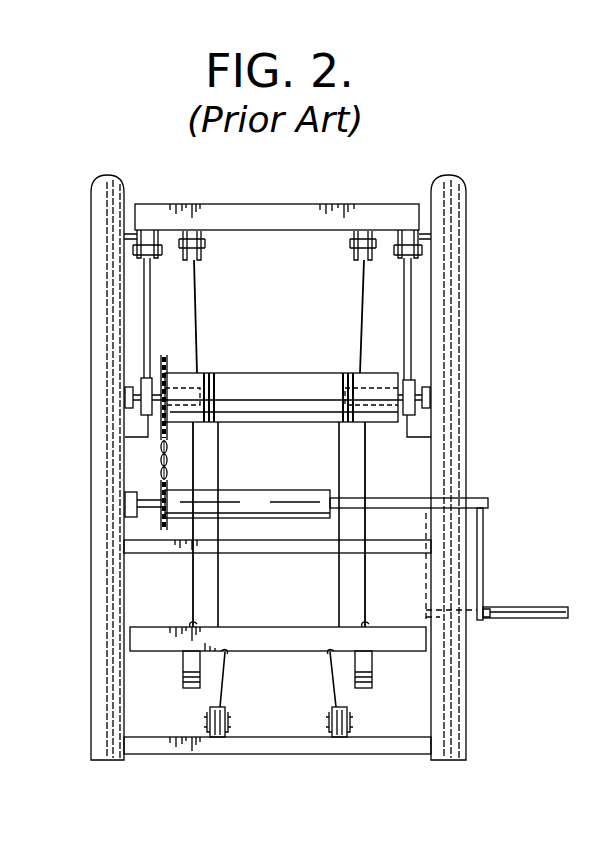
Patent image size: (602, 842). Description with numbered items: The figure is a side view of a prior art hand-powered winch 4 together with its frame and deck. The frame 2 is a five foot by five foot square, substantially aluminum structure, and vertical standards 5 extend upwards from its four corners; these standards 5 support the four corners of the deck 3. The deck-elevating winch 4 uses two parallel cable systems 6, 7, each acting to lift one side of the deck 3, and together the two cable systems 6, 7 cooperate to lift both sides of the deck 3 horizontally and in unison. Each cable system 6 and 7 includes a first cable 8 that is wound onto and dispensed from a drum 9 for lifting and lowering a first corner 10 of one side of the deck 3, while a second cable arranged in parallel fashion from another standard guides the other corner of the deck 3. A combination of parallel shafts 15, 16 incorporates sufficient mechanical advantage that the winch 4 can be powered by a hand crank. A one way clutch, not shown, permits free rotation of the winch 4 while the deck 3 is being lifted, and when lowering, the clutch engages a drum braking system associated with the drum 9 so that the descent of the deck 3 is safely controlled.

The frame 2 is at (292, 748).
The deck 3 is at (272, 640).
The crank 4 is at (500, 592).
The vertical standards 5 is at (95, 340).
The cable system 6 is at (198, 333).
The cable system 7 is at (362, 342).
The first cable 8 is at (366, 455).
The drum 9 is at (272, 383).
The first corner 10 is at (197, 619).
The parallel shaft 15 is at (128, 395).
The parallel shaft 16 is at (128, 502).